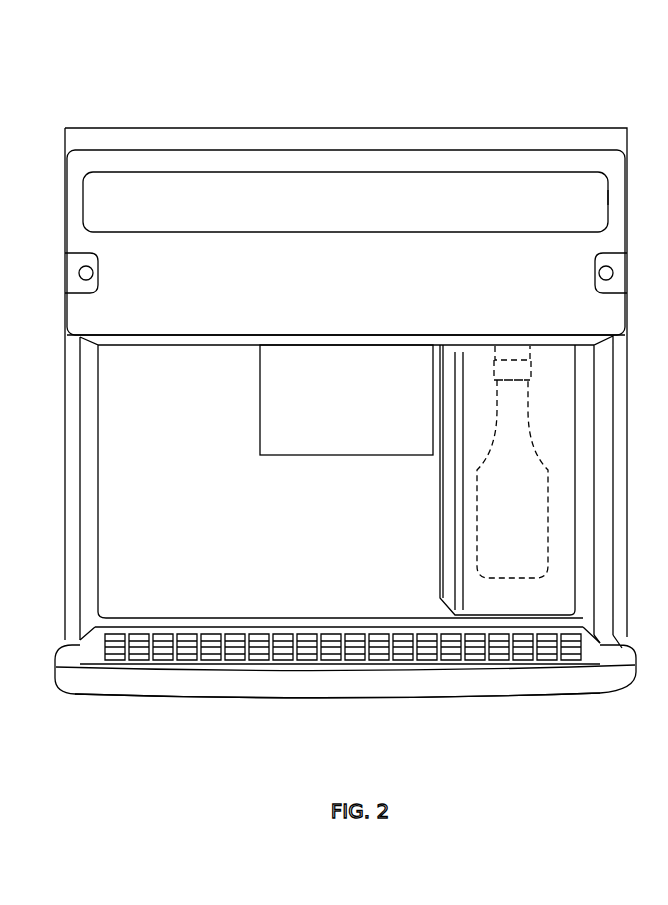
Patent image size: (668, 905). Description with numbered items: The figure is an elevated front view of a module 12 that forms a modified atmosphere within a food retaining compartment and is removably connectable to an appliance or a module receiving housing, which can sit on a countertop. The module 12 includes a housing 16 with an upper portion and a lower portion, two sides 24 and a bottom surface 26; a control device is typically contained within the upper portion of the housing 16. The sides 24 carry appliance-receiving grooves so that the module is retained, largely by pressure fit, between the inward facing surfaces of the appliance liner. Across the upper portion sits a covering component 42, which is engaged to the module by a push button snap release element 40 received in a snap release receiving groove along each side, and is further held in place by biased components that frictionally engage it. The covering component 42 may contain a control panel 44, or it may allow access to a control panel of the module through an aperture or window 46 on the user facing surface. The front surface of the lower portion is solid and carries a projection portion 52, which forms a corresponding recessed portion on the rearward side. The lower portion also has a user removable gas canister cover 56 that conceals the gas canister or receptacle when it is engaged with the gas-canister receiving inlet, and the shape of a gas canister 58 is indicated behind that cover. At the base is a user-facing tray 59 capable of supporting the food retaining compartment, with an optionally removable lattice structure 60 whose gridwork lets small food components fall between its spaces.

The module 12 is at (163, 109).
The housing 16 is at (408, 128).
The sides 24 is at (617, 376).
The bottom surface 26 is at (410, 699).
The push button snap release element 40 is at (100, 270).
The covering component 42 is at (317, 293).
The control panel 44 is at (317, 213).
The aperture/window 46 is at (608, 198).
The projection portion 52 is at (334, 408).
The gas canister cover 56 is at (542, 407).
The bottle 58 is at (537, 497).
The tray 59 is at (515, 690).
The lattice structure 60 is at (568, 643).